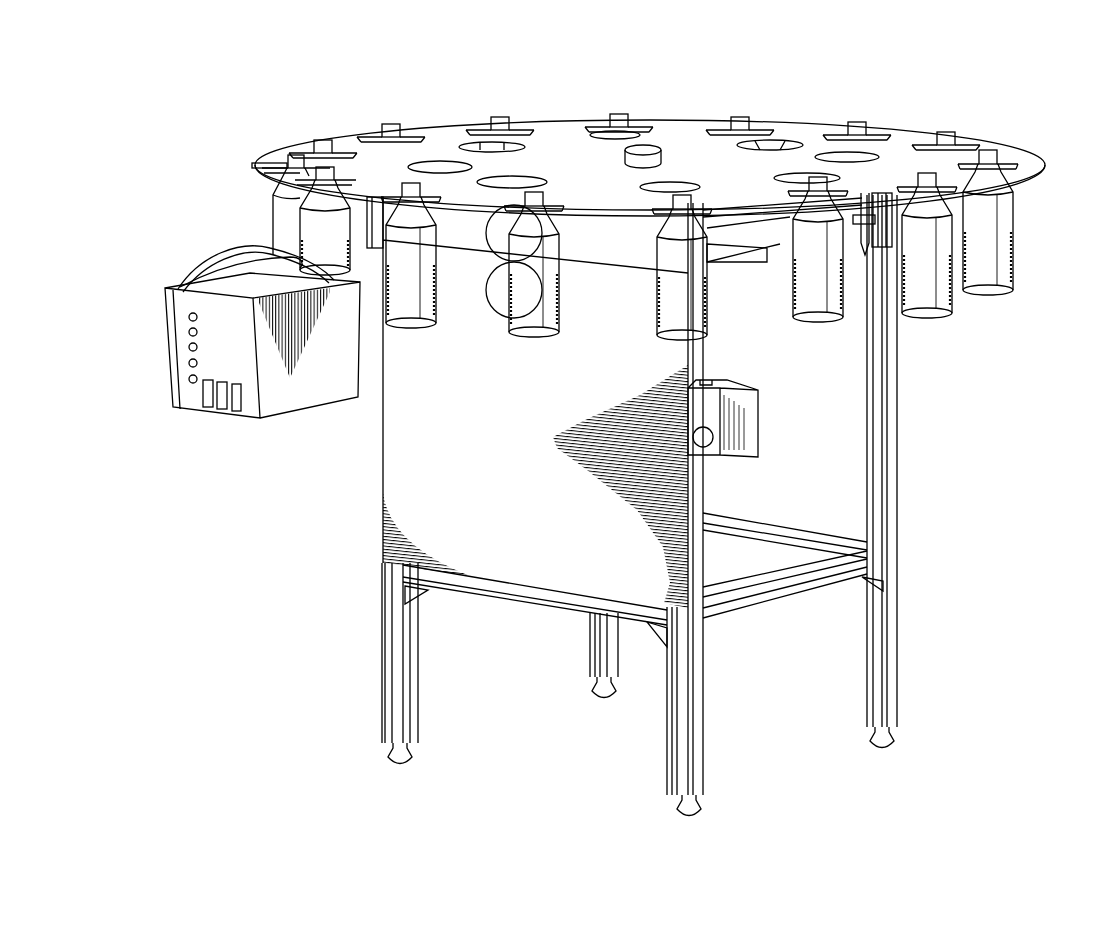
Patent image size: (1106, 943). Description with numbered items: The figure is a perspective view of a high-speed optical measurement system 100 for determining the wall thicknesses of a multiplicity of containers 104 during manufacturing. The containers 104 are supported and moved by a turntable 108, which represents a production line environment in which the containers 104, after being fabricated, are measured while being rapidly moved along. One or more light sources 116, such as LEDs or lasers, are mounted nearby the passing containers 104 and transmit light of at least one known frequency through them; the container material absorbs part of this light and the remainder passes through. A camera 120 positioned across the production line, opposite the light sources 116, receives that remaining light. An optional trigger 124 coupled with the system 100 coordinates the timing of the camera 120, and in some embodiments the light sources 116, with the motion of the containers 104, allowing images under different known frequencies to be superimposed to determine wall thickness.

The high-speed optical measurement system 100 is at (328, 64).
The containers 104 is at (837, 327).
The turntable 108 is at (563, 130).
The light sources 116 is at (490, 313).
The camera 120 is at (177, 287).
The trigger 124 is at (865, 200).